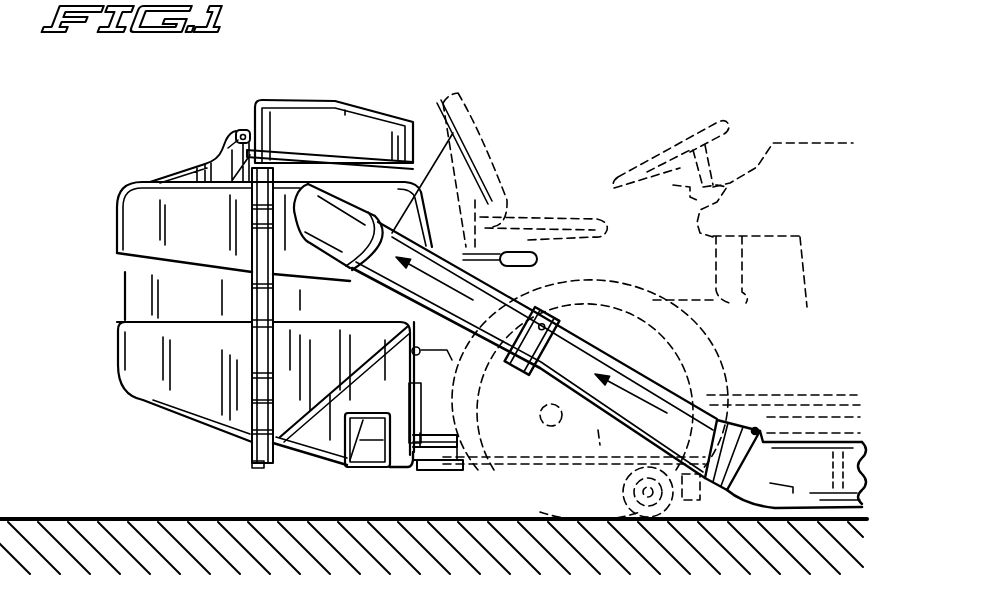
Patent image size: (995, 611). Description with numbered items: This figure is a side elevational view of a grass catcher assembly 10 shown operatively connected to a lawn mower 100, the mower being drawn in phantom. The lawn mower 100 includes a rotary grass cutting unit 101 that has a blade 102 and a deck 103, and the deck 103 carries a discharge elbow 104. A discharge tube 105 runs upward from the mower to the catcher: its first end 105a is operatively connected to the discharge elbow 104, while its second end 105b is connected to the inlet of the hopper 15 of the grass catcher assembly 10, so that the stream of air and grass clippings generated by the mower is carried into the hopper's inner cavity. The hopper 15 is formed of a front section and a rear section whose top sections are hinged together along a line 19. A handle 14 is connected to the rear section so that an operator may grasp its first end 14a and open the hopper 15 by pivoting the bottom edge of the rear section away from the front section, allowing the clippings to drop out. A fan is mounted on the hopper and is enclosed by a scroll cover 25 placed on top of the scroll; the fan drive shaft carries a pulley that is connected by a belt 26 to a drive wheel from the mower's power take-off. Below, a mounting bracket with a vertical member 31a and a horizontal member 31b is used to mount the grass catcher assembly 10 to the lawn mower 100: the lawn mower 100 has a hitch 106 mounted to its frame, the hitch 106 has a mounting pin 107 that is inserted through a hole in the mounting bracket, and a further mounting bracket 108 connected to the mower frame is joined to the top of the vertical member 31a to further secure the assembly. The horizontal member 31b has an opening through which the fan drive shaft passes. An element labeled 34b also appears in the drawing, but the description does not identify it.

The grass catcher assembly 10 is at (336, 68).
The handle 14 is at (493, 165).
The first end 14a is at (517, 250).
The hopper 15 is at (236, 475).
The line 19 is at (234, 135).
The scroll cover 25 is at (345, 100).
The belt 26 is at (450, 471).
The vertical member 31a is at (417, 397).
The horizontal member 31b is at (333, 472).
The bottom wall 34b is at (347, 463).
The lawn mower 100 is at (828, 128).
The rotary grass cutting unit 101 is at (777, 432).
The blade 102 is at (803, 494).
The deck 103 is at (773, 434).
The discharge elbow 104 is at (843, 440).
The discharge tube 105 is at (653, 357).
The first end 105a is at (717, 492).
The second end 105b is at (462, 112).
The hitch 106 is at (460, 467).
The mounting pin 107 is at (440, 432).
The mounting bracket 108 is at (524, 300).